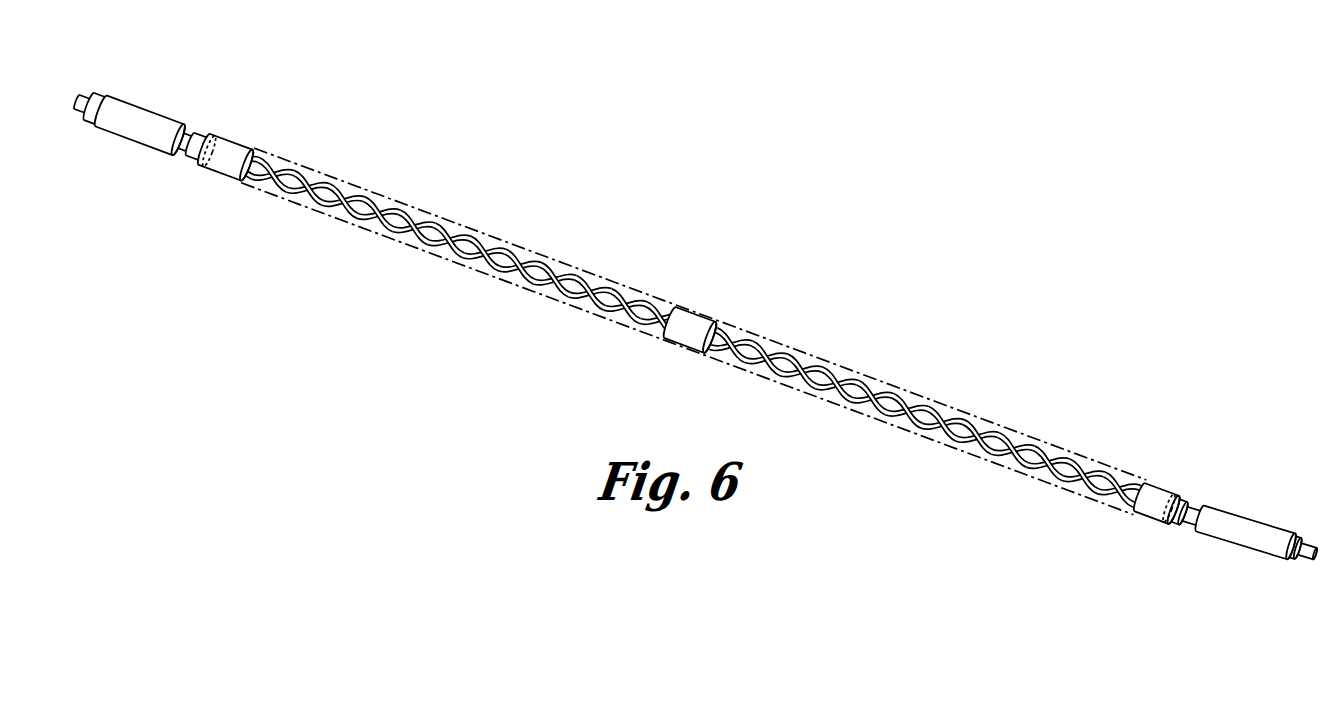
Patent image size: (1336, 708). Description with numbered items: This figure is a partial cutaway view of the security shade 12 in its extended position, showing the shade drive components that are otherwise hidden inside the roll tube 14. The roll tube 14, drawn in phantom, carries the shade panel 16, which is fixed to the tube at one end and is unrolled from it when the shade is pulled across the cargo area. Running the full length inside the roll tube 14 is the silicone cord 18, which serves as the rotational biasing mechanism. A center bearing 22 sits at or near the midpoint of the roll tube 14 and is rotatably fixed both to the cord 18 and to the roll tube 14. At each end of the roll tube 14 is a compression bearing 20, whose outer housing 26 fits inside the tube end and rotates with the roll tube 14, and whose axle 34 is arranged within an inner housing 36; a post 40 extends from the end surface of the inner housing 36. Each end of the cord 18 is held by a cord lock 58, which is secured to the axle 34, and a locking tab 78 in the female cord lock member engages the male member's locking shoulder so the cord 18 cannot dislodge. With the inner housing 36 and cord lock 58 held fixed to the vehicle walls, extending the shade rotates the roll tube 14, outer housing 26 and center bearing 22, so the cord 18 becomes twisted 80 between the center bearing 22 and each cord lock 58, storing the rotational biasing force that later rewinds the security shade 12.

The security shade 12 is at (688, 336).
The roll tube 14 is at (952, 410).
The shade panel 16 is at (1200, 540).
The cord 18 is at (696, 331).
The compression bearing 20 is at (153, 127).
The center bearing 22 is at (686, 324).
The outer housing 26 is at (143, 138).
The axle 34 is at (1194, 523).
The inner housing 36 is at (1297, 562).
The post 40 is at (85, 100).
The cord lock 58 is at (1151, 521).
The locking tab 78 is at (220, 178).
The twisted cord 80 is at (934, 421).